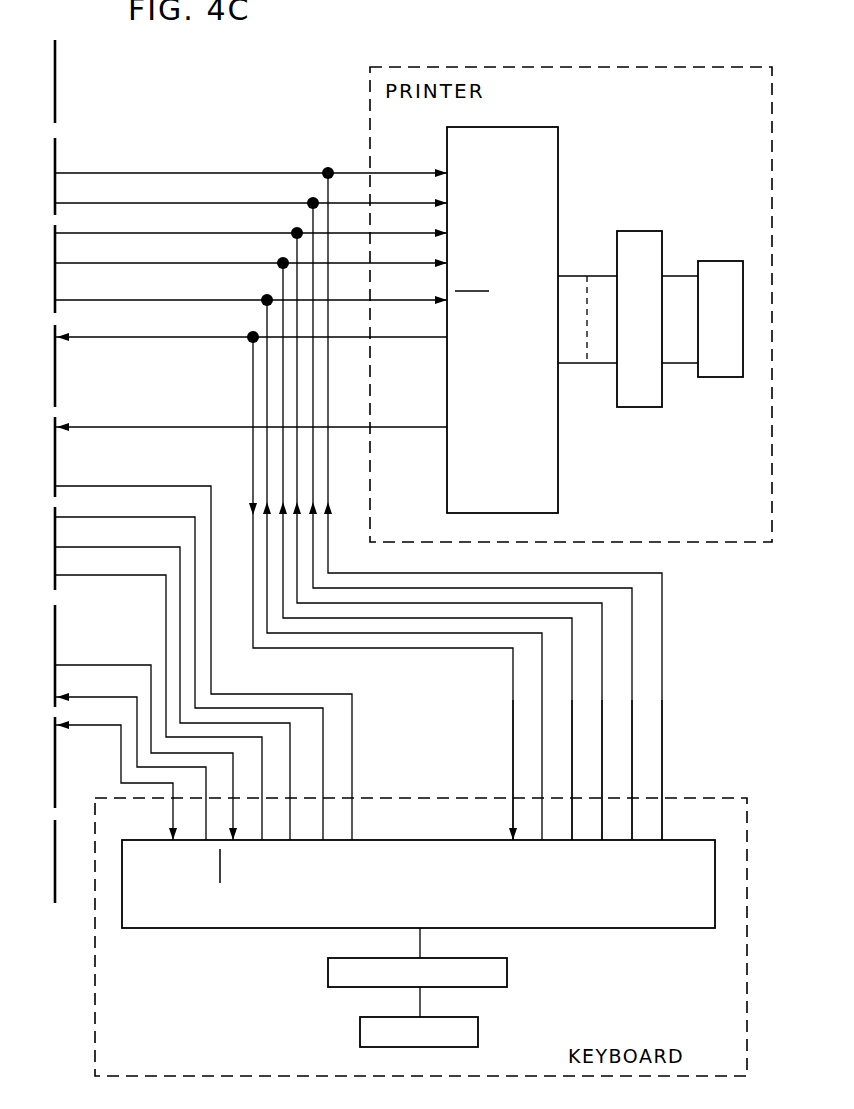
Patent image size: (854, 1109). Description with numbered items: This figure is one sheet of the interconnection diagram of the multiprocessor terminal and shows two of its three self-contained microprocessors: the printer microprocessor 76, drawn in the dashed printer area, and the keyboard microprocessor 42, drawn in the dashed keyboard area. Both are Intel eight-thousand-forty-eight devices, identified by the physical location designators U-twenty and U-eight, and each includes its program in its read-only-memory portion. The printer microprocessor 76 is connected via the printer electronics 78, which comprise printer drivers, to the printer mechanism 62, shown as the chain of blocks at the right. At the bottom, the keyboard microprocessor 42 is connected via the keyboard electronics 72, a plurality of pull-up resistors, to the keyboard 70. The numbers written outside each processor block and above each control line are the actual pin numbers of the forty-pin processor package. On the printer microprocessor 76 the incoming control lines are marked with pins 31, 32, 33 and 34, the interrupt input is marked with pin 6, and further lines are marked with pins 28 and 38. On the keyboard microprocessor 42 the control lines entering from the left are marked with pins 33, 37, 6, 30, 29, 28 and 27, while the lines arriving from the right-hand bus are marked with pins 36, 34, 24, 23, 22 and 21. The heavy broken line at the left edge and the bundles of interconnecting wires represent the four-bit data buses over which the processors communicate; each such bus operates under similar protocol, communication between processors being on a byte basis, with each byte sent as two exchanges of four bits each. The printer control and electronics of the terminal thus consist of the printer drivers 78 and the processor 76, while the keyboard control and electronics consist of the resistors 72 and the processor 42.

The printer microprocessor 76 is at (557, 152).
The printer electronics 78 is at (625, 233).
The printer mechanism 62 is at (708, 262).
The keyboard microprocessor 42 is at (235, 930).
The keyboard electronics 72 is at (328, 978).
The keyboard 70 is at (360, 1030).
The pin number 31 is at (358, 494).
The pin number 32 is at (343, 509).
The pin number 33 is at (328, 524).
The pin number 34 is at (313, 539).
The pin number 6 is at (298, 557).
The pin number 28 is at (286, 576).
The pin number 38 is at (251, 416).
The pin number 27 is at (203, 663).
The pin number 29 is at (172, 693).
The pin number 30 is at (158, 707).
The pin number 37 is at (130, 766).
The pin number 36 is at (499, 770).
The pin number 24 is at (559, 770).
The pin number 23 is at (589, 770).
The pin number 22 is at (619, 770).
The pin number 21 is at (649, 770).